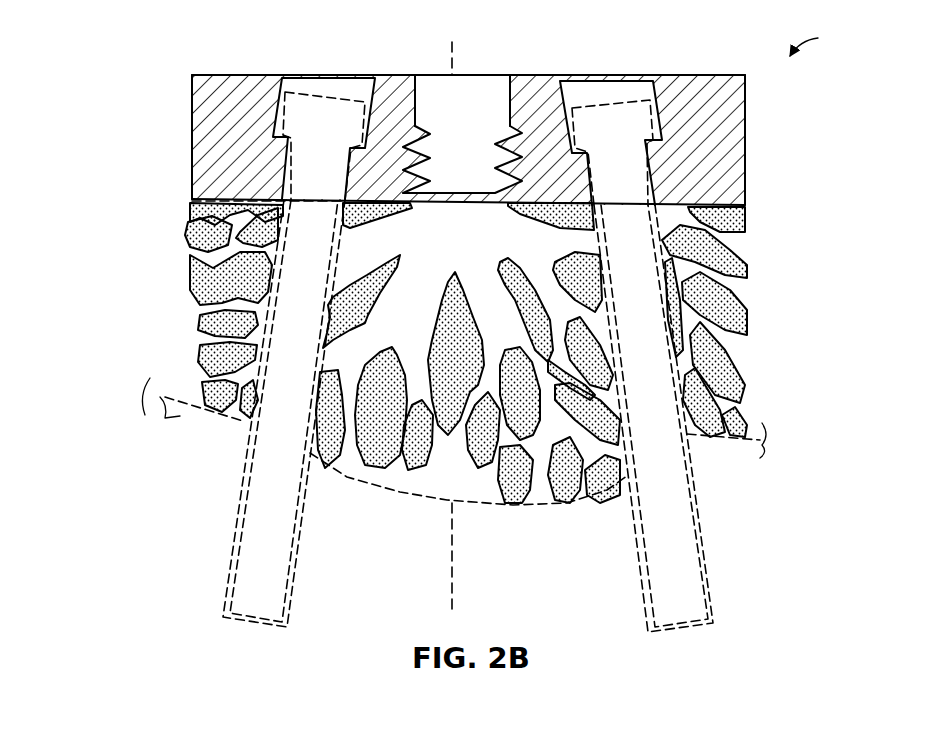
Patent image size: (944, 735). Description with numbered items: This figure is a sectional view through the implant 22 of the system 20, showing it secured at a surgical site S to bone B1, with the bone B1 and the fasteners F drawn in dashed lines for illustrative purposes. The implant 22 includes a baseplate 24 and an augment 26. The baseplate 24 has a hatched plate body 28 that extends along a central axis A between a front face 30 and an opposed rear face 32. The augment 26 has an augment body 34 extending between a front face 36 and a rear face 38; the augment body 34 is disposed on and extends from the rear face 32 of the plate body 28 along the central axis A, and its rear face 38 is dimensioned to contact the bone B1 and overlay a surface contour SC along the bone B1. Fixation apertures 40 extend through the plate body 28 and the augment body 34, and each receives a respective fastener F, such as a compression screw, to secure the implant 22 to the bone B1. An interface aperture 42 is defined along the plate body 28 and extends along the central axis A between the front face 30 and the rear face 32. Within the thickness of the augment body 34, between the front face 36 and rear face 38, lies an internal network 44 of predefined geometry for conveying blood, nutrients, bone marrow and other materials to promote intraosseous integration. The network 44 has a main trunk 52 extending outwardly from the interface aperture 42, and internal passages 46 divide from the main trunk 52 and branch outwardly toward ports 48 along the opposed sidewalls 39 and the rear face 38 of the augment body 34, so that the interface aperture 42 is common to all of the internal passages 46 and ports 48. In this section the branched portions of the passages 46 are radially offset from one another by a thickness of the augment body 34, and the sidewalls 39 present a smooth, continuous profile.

The system 20 is at (177, 33).
The implant 22 is at (177, 33).
The baseplate 24 is at (207, 70).
The augment 26 is at (183, 232).
The plate body 28 is at (728, 118).
The front face 30 is at (702, 75).
The rear face 32 is at (742, 220).
The augment body 34 is at (190, 287).
The front face 36 is at (217, 200).
The rear face 38 is at (600, 502).
The sidewalls 39 is at (190, 268).
The fixation apertures 40 is at (283, 80).
The interface aperture 42 is at (508, 97).
The internal network 44 is at (787, 258).
The internal passages 46 is at (232, 393).
The ports 48 is at (433, 497).
The main trunk 52 is at (477, 207).
The central axis A is at (447, 60).
The bone B1 is at (163, 397).
The fastener F is at (230, 575).
The surgical site S is at (817, 39).
The surface contour SC is at (748, 435).